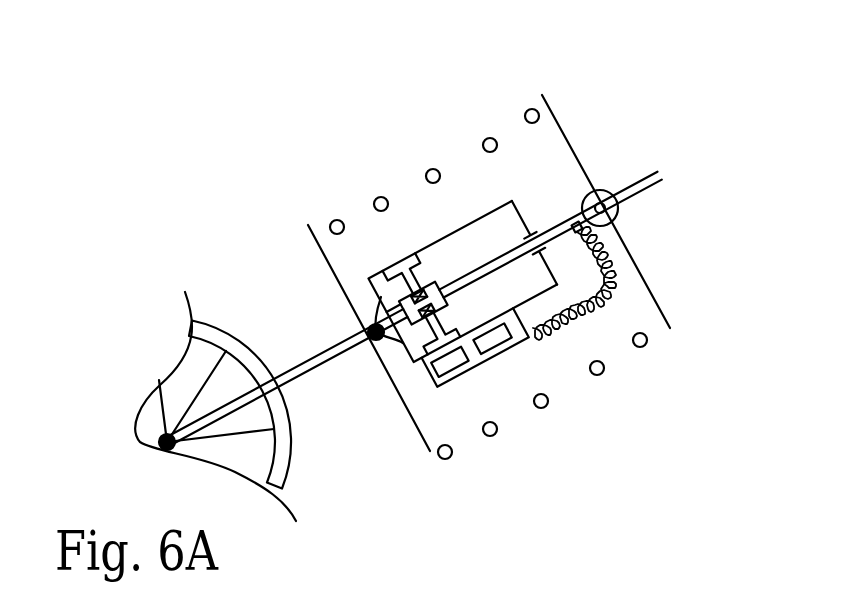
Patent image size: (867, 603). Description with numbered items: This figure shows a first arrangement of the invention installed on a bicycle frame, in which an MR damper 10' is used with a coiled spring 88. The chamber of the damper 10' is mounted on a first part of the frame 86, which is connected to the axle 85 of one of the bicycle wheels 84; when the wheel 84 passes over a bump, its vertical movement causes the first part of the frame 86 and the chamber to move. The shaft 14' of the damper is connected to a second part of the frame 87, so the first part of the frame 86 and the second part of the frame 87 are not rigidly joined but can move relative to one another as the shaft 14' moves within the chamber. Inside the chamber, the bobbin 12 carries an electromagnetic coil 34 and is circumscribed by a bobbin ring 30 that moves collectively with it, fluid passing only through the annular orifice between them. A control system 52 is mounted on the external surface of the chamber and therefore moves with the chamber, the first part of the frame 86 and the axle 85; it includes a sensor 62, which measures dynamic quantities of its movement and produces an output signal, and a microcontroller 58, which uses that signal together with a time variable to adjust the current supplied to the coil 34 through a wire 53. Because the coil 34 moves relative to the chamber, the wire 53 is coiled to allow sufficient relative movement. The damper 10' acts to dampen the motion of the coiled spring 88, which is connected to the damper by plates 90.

The MR damper 10' is at (438, 245).
The bobbin 12 is at (432, 300).
The shaft 14' is at (550, 234).
The bobbin ring 30 is at (421, 257).
The electromagnetic coil 34 is at (413, 297).
The control system 52 is at (483, 362).
The wire 53 is at (600, 313).
The microcontroller 58 is at (497, 341).
The sensor 62 is at (455, 365).
The bicycle wheel 84 is at (283, 468).
The axle 85 is at (160, 441).
The first part of the frame 86 is at (327, 371).
The second part of the frame 87 is at (642, 193).
The coiled spring 88 is at (490, 138).
The plates 90 is at (654, 293).